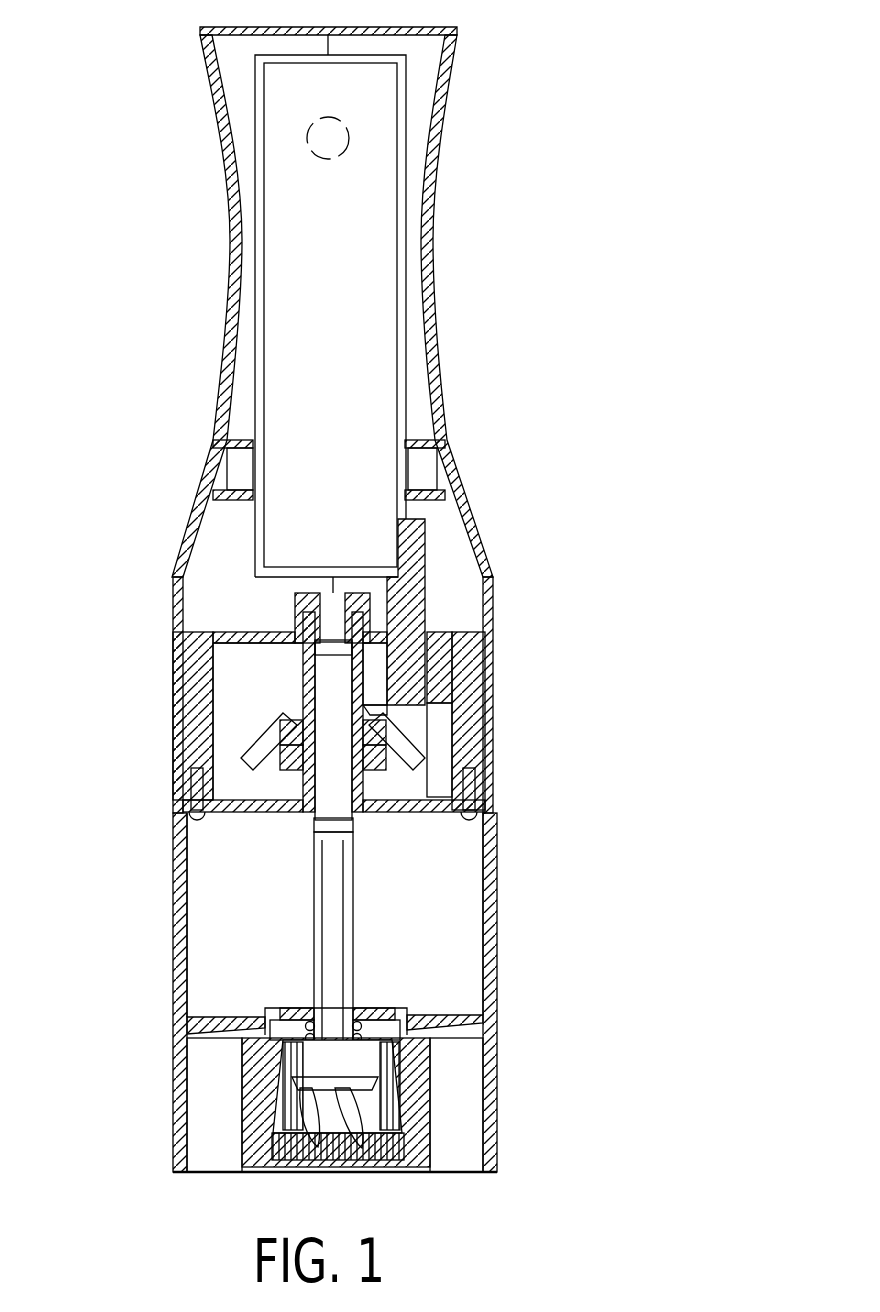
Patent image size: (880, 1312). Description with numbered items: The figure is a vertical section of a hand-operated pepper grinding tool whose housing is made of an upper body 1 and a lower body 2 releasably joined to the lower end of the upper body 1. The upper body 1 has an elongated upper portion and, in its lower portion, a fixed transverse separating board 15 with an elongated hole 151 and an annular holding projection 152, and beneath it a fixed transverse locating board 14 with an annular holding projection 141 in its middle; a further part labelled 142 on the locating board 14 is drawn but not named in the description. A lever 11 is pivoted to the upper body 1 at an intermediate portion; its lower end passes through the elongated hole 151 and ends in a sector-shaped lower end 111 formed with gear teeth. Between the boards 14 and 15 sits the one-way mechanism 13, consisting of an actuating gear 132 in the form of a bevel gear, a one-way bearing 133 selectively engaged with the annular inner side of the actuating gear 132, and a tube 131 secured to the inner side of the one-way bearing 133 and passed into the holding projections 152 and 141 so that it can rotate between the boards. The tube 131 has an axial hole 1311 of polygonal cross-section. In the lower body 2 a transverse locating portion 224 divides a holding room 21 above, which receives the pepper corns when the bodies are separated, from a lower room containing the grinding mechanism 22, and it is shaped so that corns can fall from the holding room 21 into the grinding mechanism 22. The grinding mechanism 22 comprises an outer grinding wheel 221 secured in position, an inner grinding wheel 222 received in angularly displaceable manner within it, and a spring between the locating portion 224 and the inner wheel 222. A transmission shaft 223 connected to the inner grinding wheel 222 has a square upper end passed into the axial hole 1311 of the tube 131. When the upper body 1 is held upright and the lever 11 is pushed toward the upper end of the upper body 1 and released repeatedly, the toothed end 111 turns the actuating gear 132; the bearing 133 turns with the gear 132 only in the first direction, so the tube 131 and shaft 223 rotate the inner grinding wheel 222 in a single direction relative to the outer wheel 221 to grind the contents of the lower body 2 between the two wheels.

The upper body 1 is at (440, 315).
The lever 11 is at (373, 200).
The sector-shaped lower end 111 is at (425, 735).
The one-way mechanism 13 is at (237, 707).
The tube 131 is at (375, 676).
The axial hole 1311 is at (380, 703).
The actuating gear 132 is at (257, 743).
The one-way bearing 133 is at (263, 778).
The transverse locating board 14 is at (410, 793).
The annular holding projection 141 is at (318, 806).
The shaft coupling 142 is at (320, 822).
The transverse separating board 15 is at (240, 637).
The elongated hole 151 is at (378, 600).
The annular holding projection 152 is at (297, 594).
The lower body 2 is at (507, 1002).
The holding room 21 is at (205, 967).
The grinding mechanism 22 is at (453, 1092).
The outer grinding wheel 221 is at (257, 1093).
The inner grinding wheel 222 is at (263, 1118).
The transmission shaft 223 is at (337, 943).
The transverse locating portion 224 is at (192, 1017).